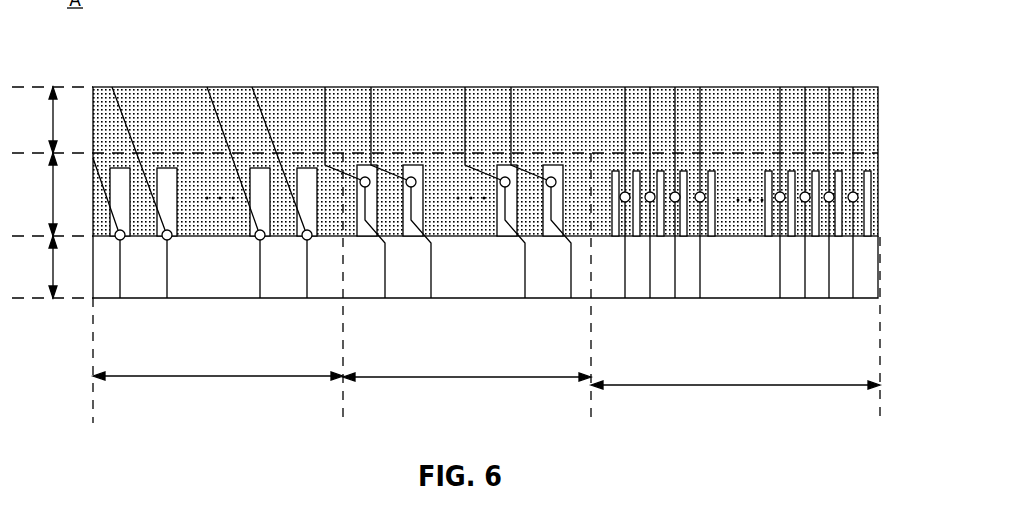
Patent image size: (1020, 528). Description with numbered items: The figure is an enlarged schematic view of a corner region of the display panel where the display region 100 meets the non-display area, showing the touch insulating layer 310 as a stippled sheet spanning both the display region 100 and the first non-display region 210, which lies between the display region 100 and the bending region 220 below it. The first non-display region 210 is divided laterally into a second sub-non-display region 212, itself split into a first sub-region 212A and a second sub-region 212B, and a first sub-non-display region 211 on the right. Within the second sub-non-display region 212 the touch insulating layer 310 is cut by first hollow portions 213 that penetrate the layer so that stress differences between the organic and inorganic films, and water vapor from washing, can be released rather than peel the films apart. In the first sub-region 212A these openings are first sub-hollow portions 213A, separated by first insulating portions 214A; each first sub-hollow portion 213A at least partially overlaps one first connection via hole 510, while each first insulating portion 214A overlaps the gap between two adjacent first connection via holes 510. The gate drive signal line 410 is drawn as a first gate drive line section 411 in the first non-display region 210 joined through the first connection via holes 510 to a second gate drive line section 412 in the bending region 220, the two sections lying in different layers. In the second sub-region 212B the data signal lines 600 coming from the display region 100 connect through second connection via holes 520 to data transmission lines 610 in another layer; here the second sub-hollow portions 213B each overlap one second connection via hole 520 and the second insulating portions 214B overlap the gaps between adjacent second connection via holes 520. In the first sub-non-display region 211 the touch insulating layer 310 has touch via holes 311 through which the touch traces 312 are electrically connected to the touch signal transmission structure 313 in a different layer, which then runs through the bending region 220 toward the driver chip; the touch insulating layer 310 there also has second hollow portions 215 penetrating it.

The display region 100 is at (49, 120).
The first non-display region 210 is at (442, 194).
The bending region 220 is at (442, 267).
The first sub-non-display region 211 is at (735, 255).
The second sub-non-display region 212 is at (342, 288).
The first sub-region 212A is at (218, 288).
The second sub-region 212B is at (467, 288).
The first hollow portions 213 is at (366, 141).
The first sub-hollow portion 213A is at (311, 186).
The second sub-hollow portions 213B is at (557, 170).
The first insulating portions 214A is at (333, 240).
The second insulating portions 214B is at (575, 255).
The second hollow portions 215 is at (713, 223).
The touch insulating layer 310 is at (175, 112).
The touch via holes 311 is at (780, 201).
The touch traces 312 is at (857, 123).
The touch signal transmission structure 313 is at (857, 210).
The gate drive signal line 410 is at (199, 196).
The first gate drive line section 411 is at (122, 110).
The second gate drive line section 412 is at (167, 285).
The first connection via holes 510 is at (171, 239).
The second connection via holes 520 is at (413, 178).
The data signal lines 600 is at (373, 105).
The data transmission lines 610 is at (423, 203).